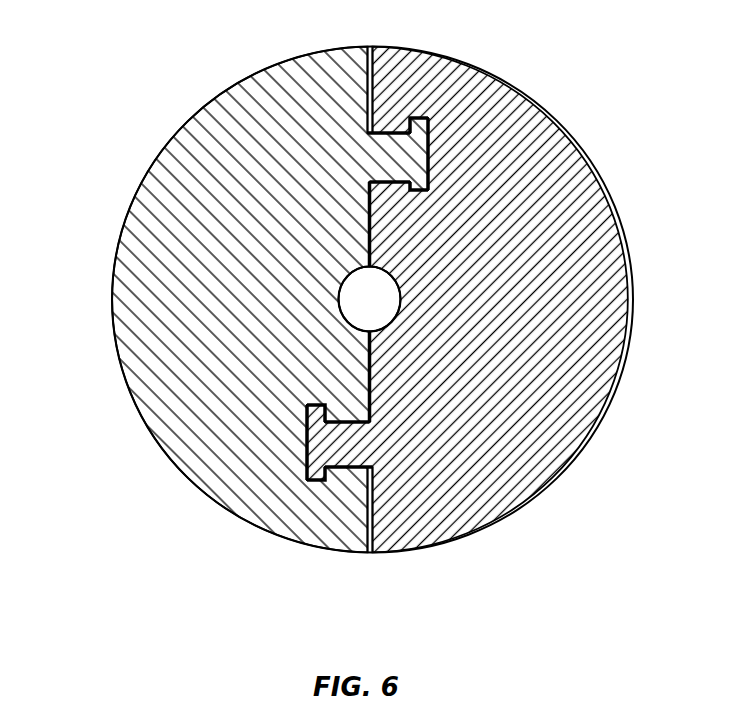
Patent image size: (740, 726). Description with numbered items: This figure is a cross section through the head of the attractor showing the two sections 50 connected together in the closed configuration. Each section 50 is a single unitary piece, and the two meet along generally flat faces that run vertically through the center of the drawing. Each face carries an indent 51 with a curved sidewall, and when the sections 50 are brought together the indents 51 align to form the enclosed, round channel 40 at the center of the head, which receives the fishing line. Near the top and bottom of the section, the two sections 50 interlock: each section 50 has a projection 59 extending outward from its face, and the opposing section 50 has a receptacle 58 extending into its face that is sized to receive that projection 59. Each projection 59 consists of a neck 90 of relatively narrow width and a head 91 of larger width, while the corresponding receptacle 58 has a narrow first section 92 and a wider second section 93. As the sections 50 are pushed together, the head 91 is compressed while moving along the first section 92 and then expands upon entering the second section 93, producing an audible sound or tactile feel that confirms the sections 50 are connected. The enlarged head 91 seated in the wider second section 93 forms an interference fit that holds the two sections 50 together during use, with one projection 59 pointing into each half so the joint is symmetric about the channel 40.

The channel 40 is at (373, 292).
The section 50 is at (437, 77).
The indent 51 is at (336, 306).
The receptacle 58 is at (410, 203).
The projection 59 is at (387, 165).
The neck 90 is at (430, 130).
The head 91 is at (388, 153).
The first section 92 is at (380, 185).
The second section 93 is at (432, 170).